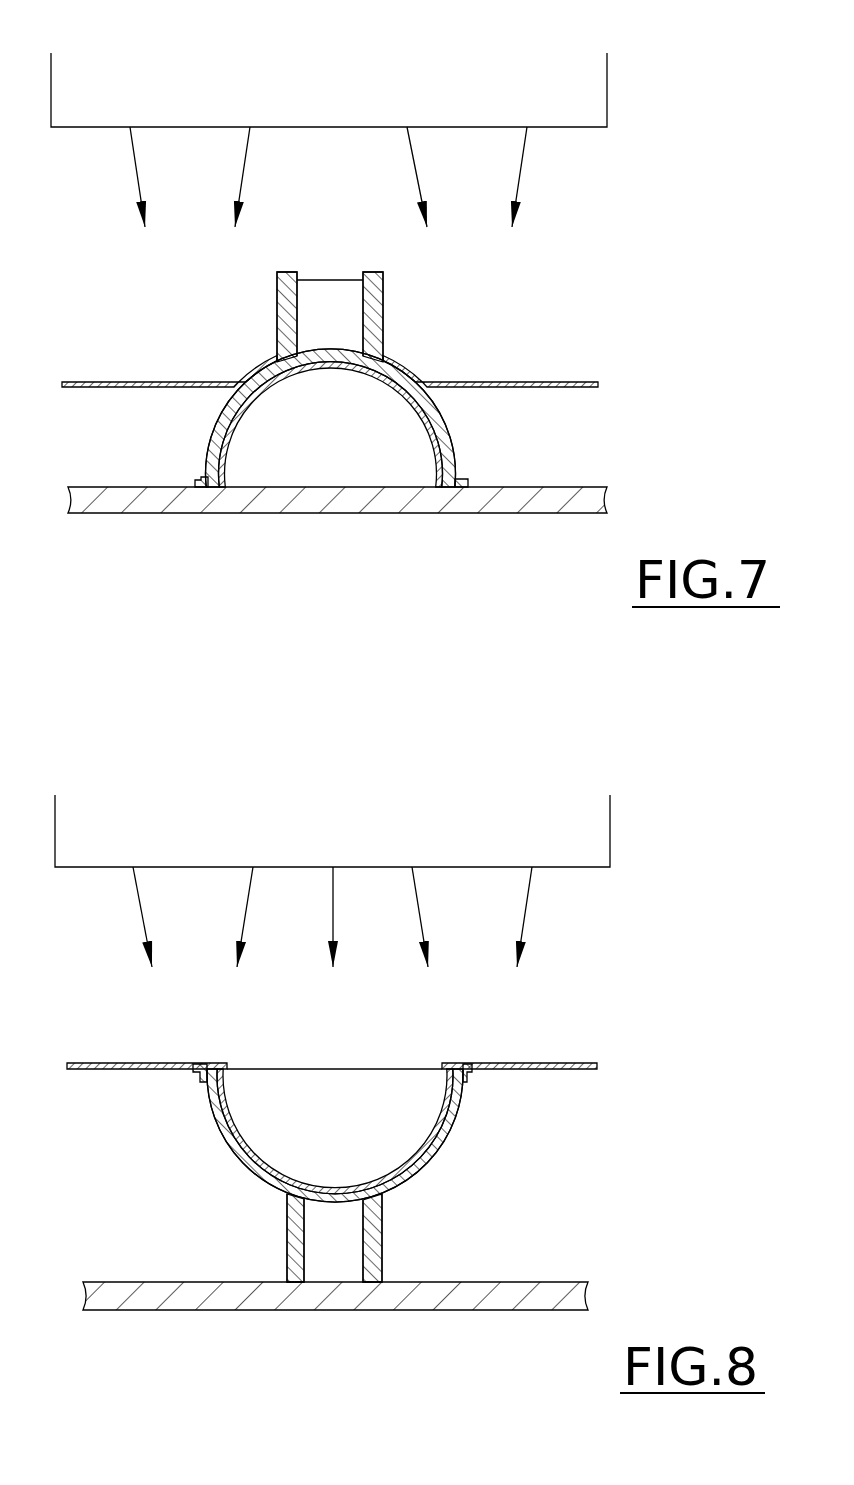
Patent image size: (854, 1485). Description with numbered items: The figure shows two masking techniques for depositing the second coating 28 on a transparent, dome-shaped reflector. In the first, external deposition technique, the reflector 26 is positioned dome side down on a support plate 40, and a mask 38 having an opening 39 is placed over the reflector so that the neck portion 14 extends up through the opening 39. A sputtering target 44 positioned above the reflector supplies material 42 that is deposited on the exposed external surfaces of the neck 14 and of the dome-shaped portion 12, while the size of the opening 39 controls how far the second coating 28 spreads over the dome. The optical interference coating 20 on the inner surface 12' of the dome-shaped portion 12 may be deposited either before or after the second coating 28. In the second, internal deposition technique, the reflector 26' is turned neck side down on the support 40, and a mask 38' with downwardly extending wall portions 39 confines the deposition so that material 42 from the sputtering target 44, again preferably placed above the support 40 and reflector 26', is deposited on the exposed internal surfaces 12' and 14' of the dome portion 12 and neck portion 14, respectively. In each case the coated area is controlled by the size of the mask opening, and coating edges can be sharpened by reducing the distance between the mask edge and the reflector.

In FIG. 7, the dome-shaped reflecting portion 12 is at (364, 418).
In FIG. 8, the inner surface of dome-shaped portion 12' is at (364, 1135).
In FIG. 7, the neck portion 14 is at (297, 300).
In FIG. 8, the neck portion 14 is at (402, 1238).
In FIG. 8, the internal surface of neck portion 14' is at (268, 1238).
In FIG. 7, the optical interference coating 20 is at (237, 427).
In FIG. 7, the dome-shaped reflector 26 is at (410, 351).
In FIG. 8, the reflector 26' is at (412, 1135).
In FIG. 7, the second coating 28 is at (385, 331).
In FIG. 8, the second coating 28 is at (293, 1188).
In FIG. 7, the mask 38 is at (330, 363).
In FIG. 8, the mask 38' is at (332, 1056).
In FIG. 7, the mask opening 39 is at (243, 382).
In FIG. 8, the mask opening 39 is at (420, 1130).
In FIG. 7, the support plate 40 is at (553, 487).
In FIG. 8, the support plate 40 is at (493, 1283).
In FIG. 7, the deposited material 42 is at (242, 175).
In FIG. 8, the deposited material 42 is at (144, 923).
In FIG. 7, the sputtering target 44 is at (555, 128).
In FIG. 8, the sputtering target 44 is at (553, 868).